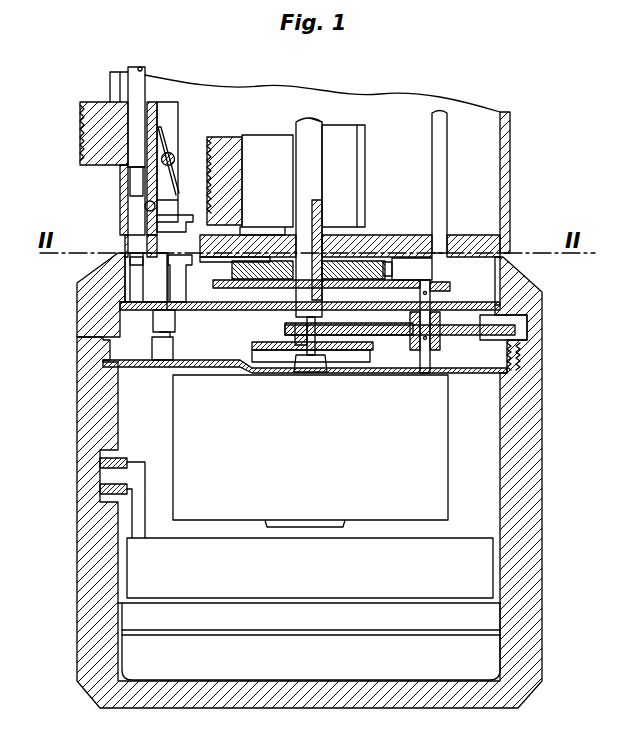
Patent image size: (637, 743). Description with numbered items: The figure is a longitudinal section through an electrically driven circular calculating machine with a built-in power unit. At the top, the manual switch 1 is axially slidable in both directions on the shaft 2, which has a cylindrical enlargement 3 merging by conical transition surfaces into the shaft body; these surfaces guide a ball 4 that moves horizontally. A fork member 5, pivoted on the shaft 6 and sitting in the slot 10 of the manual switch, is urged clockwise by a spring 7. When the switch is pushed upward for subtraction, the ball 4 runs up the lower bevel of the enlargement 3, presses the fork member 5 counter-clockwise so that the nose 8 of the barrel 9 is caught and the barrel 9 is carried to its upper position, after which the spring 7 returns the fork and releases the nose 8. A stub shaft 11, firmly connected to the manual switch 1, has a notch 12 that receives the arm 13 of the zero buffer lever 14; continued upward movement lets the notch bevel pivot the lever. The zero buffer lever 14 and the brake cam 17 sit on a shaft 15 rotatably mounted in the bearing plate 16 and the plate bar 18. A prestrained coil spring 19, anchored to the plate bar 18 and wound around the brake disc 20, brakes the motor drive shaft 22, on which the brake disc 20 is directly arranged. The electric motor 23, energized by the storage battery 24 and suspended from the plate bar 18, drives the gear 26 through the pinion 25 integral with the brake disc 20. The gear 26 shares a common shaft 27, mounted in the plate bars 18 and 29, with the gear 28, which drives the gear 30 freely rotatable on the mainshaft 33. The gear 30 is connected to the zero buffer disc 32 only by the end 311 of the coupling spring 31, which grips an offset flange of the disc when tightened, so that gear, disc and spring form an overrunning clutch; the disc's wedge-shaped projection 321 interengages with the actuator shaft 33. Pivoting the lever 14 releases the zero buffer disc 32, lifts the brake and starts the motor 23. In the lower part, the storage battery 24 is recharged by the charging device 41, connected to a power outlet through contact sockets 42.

The manual switch 1 is at (88, 116).
The shaft 2 is at (137, 82).
The cylindrical enlargement 3 is at (130, 178).
The ball 4 is at (145, 208).
The fork member 5 is at (165, 223).
The shaft 6 is at (174, 155).
The spring 7 is at (160, 132).
The nose 8 is at (203, 222).
The barrel 9 is at (265, 148).
The slot 10 is at (167, 110).
The stub shaft 11 is at (153, 320).
The notch 12 is at (153, 278).
The arm 13 is at (177, 261).
The zero buffer lever 14 is at (262, 255).
The shaft 15 is at (104, 355).
The bearing plate 16 is at (386, 238).
The brake cam 17 is at (158, 352).
The plate bar 18 is at (476, 374).
The coil spring 19 is at (373, 348).
The brake disc 20 is at (352, 354).
The motor drive shaft 22 is at (306, 356).
The electric motor 23 is at (436, 468).
The storage battery 24 is at (485, 619).
The pinion 25 is at (318, 350).
The gear 26 is at (512, 329).
The common shaft 27 is at (430, 353).
The gear 28 is at (449, 288).
The plate bar 29 is at (121, 303).
The gear 30 is at (232, 288).
The coupling spring 31 is at (390, 270).
The zero buffer disc 32 is at (402, 240).
The mainshaft 33 is at (317, 125).
The charging device 41 is at (140, 566).
The contact sockets 42 is at (105, 490).
The end of the coupling spring 311 is at (420, 275).
The wedge-shaped projection 321 is at (354, 238).